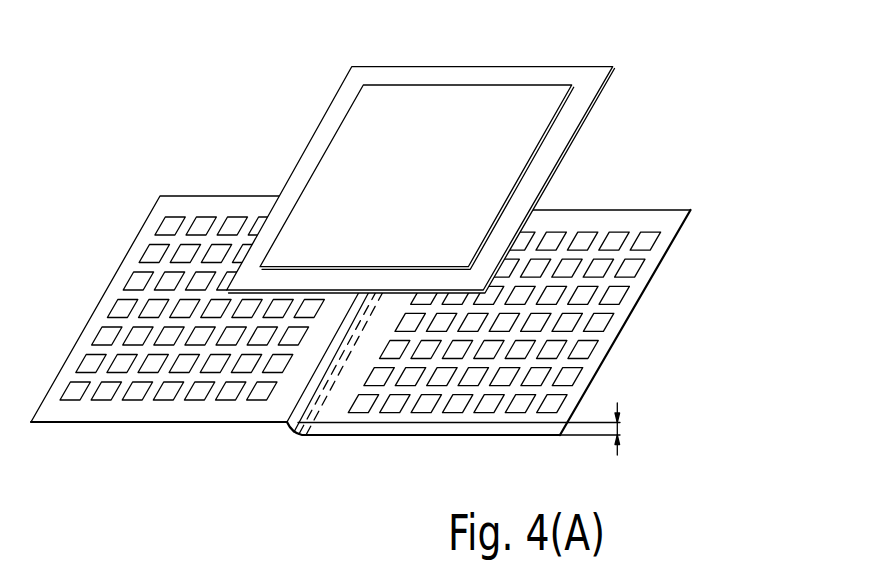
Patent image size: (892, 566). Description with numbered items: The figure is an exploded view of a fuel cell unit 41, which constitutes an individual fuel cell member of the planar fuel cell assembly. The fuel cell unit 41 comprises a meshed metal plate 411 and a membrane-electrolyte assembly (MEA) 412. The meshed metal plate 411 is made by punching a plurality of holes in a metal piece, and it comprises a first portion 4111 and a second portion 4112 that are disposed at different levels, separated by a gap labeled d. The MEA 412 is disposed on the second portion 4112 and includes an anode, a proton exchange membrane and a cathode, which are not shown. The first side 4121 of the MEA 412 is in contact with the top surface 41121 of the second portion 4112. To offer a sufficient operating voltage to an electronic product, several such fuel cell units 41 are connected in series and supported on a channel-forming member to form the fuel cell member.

The fuel cell unit 41 is at (150, 37).
The meshed metal plate 411 is at (345, 491).
The first portion 4111 is at (222, 423).
The second portion 4112 is at (505, 354).
The top surface 41121 is at (588, 310).
The membrane-electrolyte assembly (MEA) 412 is at (467, 151).
The first side 4121 is at (580, 127).